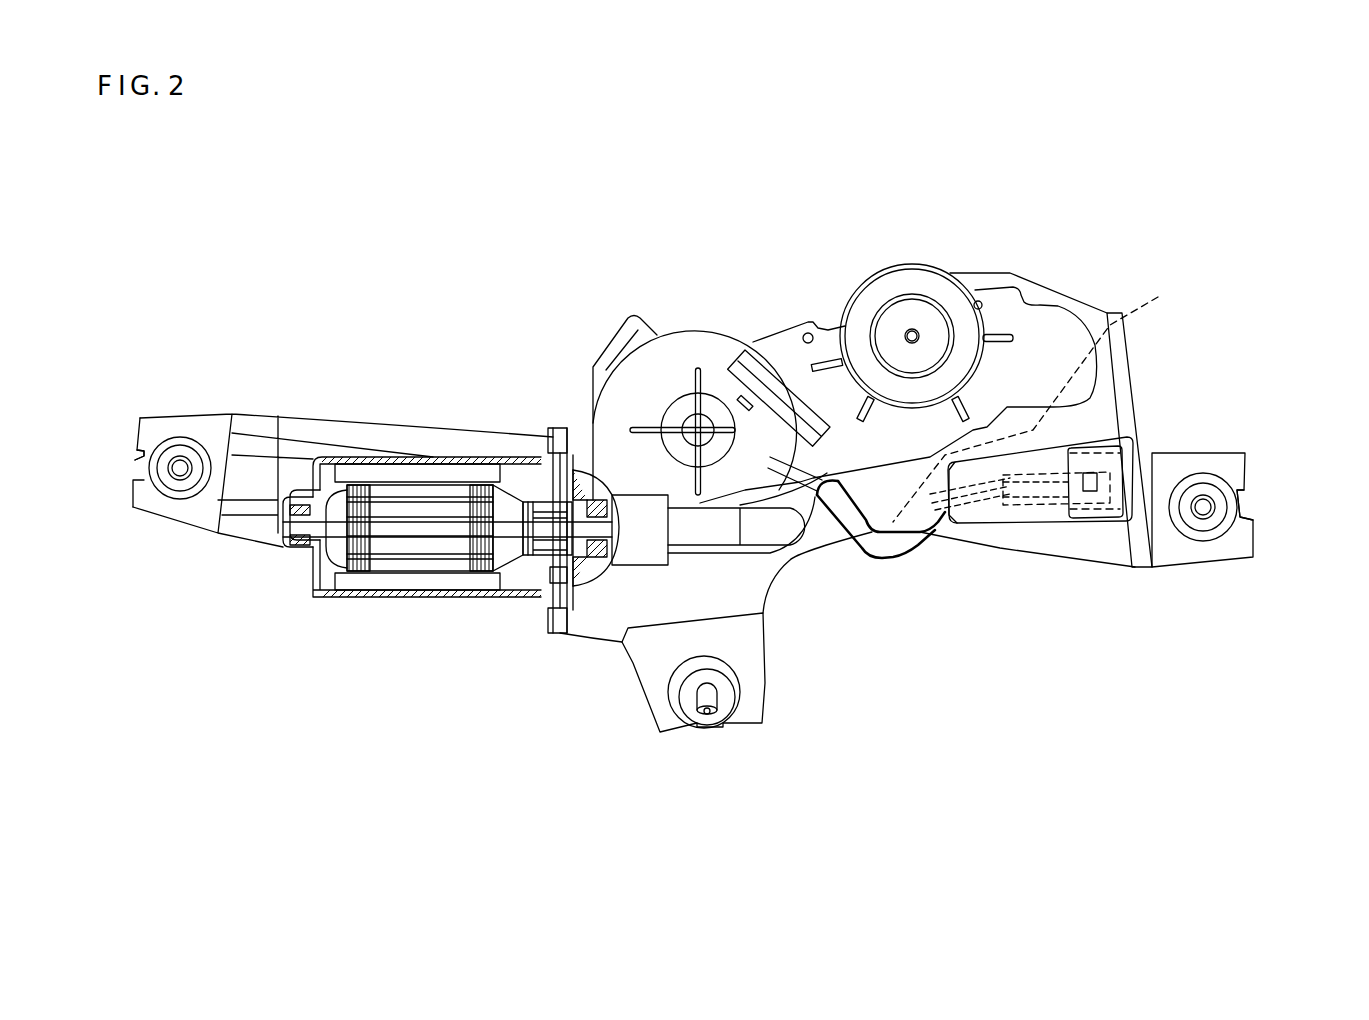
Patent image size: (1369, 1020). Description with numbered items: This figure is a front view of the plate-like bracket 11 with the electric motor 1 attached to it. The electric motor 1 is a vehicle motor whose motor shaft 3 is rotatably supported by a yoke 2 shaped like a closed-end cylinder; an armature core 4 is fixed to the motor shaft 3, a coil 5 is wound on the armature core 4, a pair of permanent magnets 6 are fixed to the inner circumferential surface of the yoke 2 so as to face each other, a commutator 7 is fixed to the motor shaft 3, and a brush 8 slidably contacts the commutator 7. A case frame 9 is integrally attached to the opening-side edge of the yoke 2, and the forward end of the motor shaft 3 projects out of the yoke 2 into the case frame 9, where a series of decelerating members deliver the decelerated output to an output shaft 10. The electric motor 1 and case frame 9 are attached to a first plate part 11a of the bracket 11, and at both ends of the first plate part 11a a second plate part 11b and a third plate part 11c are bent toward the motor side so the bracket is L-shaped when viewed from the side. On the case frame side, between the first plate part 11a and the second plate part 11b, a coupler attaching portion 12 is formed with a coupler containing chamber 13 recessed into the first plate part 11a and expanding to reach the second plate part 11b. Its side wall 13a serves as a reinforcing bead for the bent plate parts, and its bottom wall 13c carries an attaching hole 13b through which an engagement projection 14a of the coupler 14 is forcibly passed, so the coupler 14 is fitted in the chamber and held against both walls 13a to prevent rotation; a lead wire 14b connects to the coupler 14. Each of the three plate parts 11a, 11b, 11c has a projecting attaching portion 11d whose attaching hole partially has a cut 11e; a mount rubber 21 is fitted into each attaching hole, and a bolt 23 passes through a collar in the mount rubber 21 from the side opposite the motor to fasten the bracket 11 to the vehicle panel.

The electric motor 1 is at (360, 605).
The yoke 2 is at (444, 600).
The motor shaft 3 is at (312, 527).
The armature core 4 is at (388, 570).
The coil 5 is at (477, 552).
The permanent magnets 6 is at (383, 465).
The commutator 7 is at (549, 485).
The brush 8 is at (557, 500).
The case frame 9 is at (1020, 323).
The output shaft 10 is at (915, 330).
The bracket 11 is at (632, 665).
The first plate part 11a is at (738, 578).
The second plate part 11b is at (1137, 551).
The third plate part 11c is at (249, 533).
The attaching portion 11d is at (184, 522).
The cut 11e is at (135, 460).
The coupler attaching portion 12 is at (1031, 534).
The coupler containing chamber 13 is at (1061, 512).
The side wall 13a is at (1027, 440).
The attaching hole 13b is at (1104, 491).
The bottom wall 13c is at (1020, 513).
The coupler 14 is at (1018, 446).
The engagement projection 14a is at (1092, 467).
The lead wire 14b is at (880, 548).
The mount rubber 21 is at (180, 470).
The bolt 23 is at (180, 471).